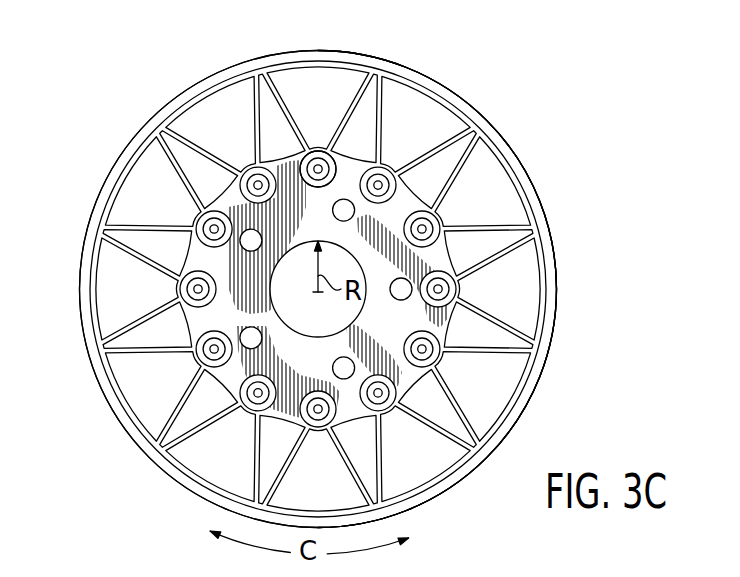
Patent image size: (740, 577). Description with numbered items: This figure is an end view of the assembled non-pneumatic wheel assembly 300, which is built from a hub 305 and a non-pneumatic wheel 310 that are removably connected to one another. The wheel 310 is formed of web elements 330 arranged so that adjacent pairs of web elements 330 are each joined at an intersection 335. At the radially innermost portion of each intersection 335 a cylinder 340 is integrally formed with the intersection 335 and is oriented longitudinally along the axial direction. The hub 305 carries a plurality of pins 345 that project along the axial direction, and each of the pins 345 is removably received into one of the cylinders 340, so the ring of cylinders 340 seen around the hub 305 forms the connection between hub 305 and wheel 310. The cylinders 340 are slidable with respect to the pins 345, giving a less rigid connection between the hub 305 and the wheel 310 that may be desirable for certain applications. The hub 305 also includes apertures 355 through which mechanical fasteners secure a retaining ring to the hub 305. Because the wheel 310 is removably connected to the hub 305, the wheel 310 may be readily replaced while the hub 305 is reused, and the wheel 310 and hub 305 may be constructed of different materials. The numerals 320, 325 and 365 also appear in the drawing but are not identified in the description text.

The non-pneumatic wheel assembly 300 is at (600, 135).
The hub 305 is at (403, 374).
The non-pneumatic wheel 310 is at (207, 67).
The outer circumferential surface 320 is at (553, 285).
The rim edge 325 is at (563, 321).
The web elements 330 is at (388, 117).
The intersection 335 is at (408, 175).
The cylinder 340 is at (444, 224).
The pins 345 is at (388, 172).
The apertures 355 is at (312, 162).
The aperture 365 is at (240, 225).